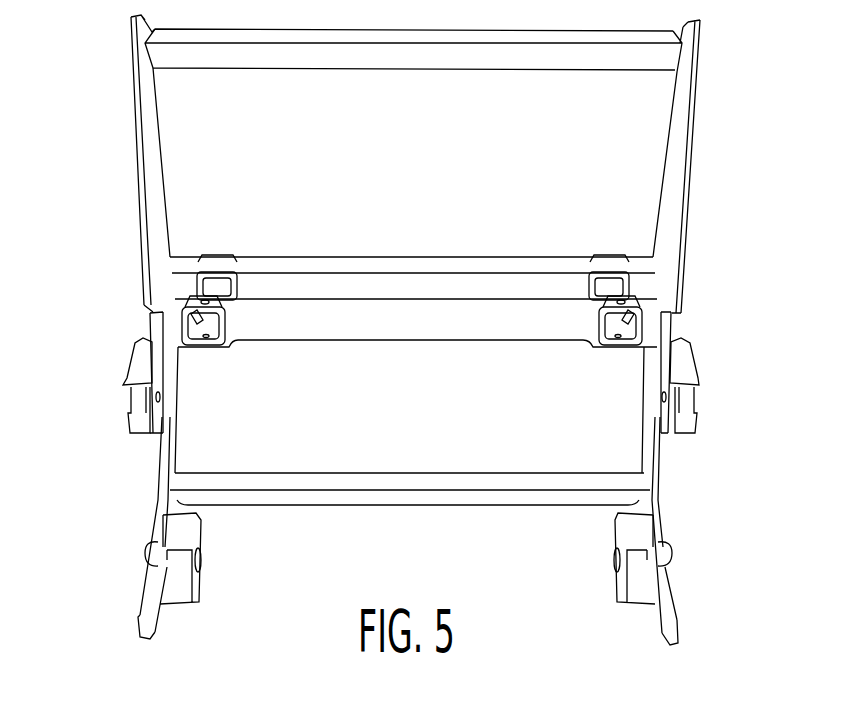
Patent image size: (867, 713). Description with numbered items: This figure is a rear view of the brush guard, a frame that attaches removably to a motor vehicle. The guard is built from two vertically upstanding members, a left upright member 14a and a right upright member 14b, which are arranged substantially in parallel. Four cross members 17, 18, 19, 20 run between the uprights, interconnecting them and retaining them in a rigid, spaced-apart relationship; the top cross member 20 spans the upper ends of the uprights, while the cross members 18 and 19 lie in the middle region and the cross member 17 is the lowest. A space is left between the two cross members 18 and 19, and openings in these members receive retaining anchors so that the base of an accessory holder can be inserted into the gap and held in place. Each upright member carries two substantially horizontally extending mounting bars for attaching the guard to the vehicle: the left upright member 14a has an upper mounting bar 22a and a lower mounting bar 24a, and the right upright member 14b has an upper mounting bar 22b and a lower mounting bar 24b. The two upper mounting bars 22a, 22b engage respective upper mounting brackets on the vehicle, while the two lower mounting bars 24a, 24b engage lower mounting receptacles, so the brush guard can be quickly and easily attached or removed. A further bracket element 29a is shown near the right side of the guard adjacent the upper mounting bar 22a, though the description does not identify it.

The left upright member 14a is at (688, 155).
The right upright member 14b is at (138, 153).
The cross member 17 is at (492, 494).
The cross member 18 is at (370, 265).
The cross member 19 is at (432, 333).
The cross member 20 is at (543, 62).
The upper mounting bar 22a is at (688, 440).
The upper mounting bar 22b is at (133, 432).
The lower mounting bar 24a is at (680, 632).
The lower mounting bar 24b is at (137, 630).
The right upper bracket 29a is at (697, 373).